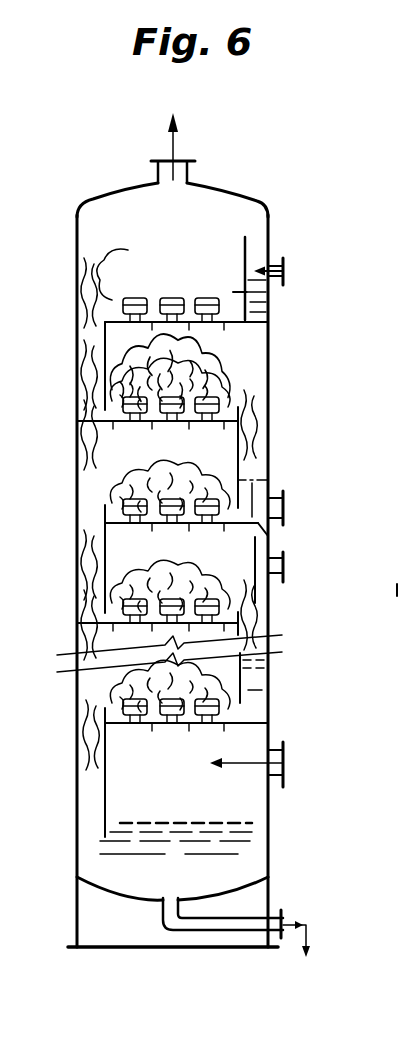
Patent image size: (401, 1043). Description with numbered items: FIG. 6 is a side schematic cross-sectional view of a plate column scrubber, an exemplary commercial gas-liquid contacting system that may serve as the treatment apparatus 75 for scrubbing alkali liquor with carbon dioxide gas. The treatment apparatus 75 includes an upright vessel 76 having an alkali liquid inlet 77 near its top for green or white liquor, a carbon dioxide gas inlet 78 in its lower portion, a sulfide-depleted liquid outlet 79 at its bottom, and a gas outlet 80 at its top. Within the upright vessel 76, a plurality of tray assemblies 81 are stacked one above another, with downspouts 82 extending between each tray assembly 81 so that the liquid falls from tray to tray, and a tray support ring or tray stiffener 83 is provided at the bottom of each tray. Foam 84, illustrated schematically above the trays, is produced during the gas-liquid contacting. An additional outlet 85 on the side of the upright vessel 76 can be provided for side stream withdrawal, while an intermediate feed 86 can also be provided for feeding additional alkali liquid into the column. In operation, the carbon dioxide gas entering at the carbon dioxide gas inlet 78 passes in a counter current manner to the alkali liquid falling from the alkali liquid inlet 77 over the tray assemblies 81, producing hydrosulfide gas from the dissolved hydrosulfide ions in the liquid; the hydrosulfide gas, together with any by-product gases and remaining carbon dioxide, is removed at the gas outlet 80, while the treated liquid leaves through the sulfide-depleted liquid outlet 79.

The treatment apparatus 75 is at (66, 694).
The upright vessel 76 is at (273, 373).
The alkali liquid inlet 77 is at (276, 266).
The carbon dioxide gas inlet 78 is at (270, 790).
The sulfide-depleted liquid outlet 79 is at (247, 917).
The gas outlet 80 is at (160, 175).
The tray assemblies 81 is at (95, 262).
The downspouts 82 is at (89, 349).
The tray support ring or tray stiffener 83 is at (134, 427).
The foam 84 is at (197, 568).
The additional outlet 85 is at (276, 494).
The intermediate feed 86 is at (276, 553).